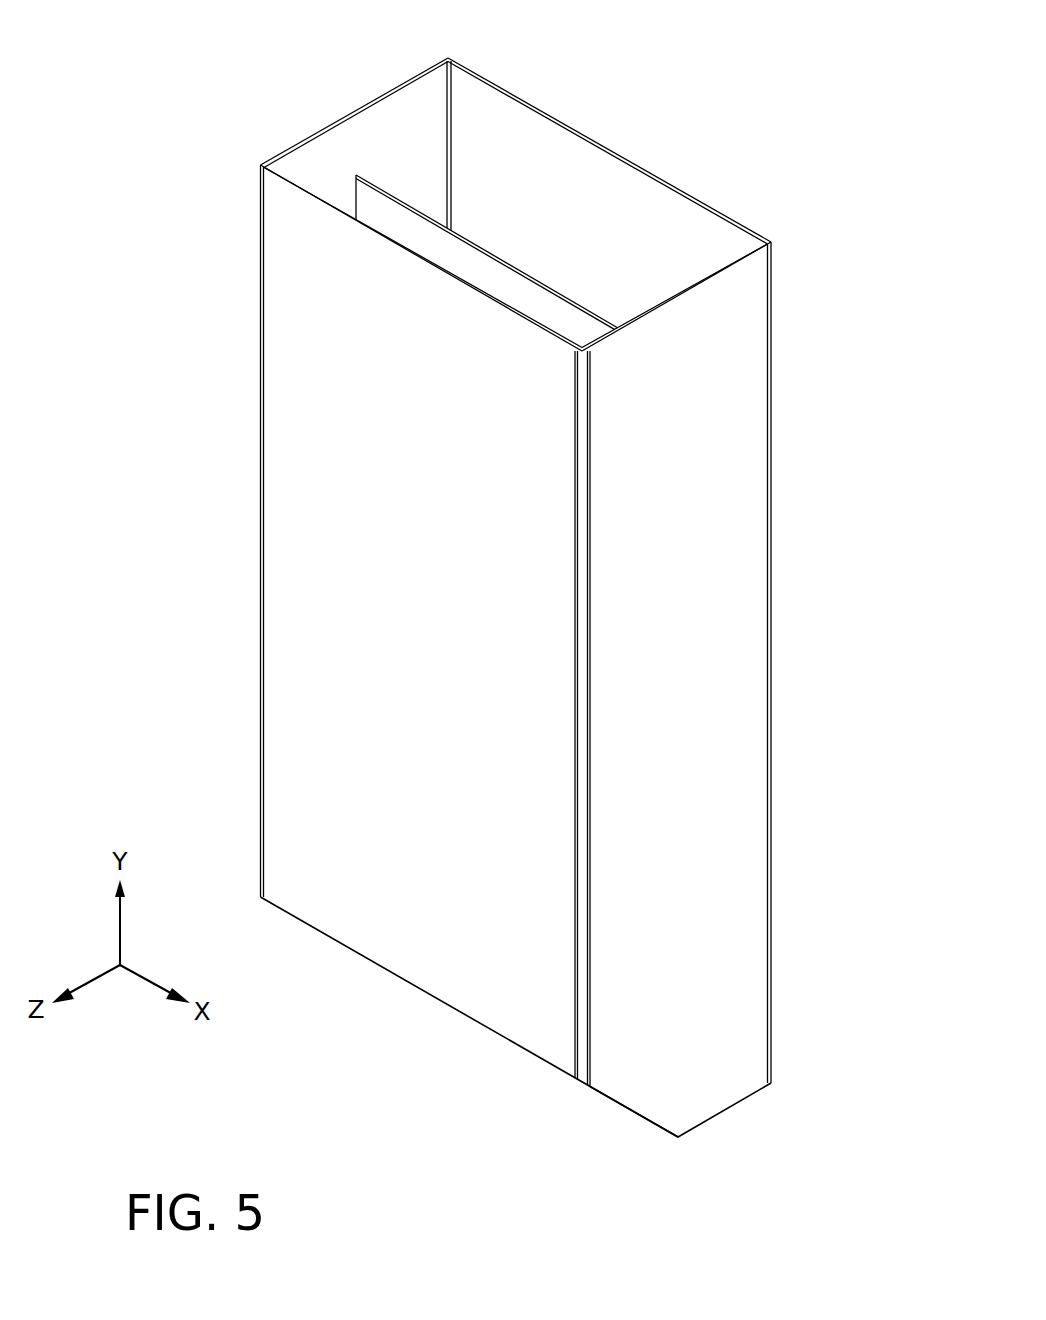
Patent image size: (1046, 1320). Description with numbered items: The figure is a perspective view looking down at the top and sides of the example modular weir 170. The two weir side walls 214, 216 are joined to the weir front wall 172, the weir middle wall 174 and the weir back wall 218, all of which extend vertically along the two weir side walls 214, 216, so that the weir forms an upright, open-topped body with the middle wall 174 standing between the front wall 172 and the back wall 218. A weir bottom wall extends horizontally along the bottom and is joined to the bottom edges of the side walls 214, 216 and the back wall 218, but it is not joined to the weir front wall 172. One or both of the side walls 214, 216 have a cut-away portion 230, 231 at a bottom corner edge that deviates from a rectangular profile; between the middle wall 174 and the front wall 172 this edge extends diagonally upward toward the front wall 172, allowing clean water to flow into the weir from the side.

The modular weir 170 is at (489, 607).
The weir front wall 172 is at (285, 218).
The weir middle wall 174 is at (383, 188).
The weir side wall 214 is at (697, 367).
The weir side wall 216 is at (313, 133).
The weir back wall 218 is at (652, 170).
The cut-away portion 230 is at (598, 1102).
The cut-away portion 231 is at (618, 1105).